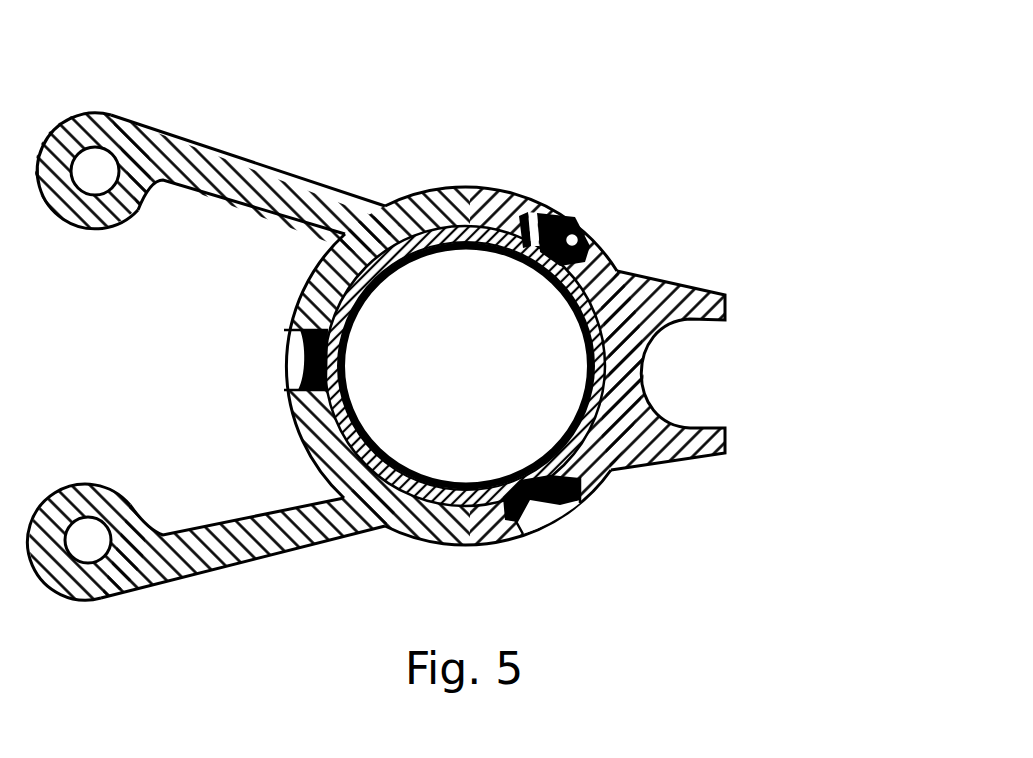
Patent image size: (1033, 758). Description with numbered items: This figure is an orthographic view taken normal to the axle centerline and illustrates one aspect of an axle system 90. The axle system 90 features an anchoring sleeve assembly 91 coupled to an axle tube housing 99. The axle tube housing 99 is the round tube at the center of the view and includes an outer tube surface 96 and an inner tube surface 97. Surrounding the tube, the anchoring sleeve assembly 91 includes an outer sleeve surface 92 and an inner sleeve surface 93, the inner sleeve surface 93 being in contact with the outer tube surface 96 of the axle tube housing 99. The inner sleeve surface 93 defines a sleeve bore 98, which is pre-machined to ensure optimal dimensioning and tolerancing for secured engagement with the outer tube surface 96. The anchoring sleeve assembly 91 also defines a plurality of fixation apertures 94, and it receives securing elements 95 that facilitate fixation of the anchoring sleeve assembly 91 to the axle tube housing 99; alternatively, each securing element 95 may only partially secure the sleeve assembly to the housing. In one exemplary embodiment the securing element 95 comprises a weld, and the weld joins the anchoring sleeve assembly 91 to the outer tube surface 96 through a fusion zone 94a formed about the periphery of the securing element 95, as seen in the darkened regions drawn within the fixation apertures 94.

The axle system 90 is at (852, 30).
The anchoring sleeve assembly 91 is at (314, 472).
The outer sleeve surface 92 is at (473, 187).
The inner sleeve surface 93 is at (505, 204).
The fixation apertures 94 is at (548, 223).
The fusion zone 94a is at (552, 207).
The securing element 95 is at (577, 235).
The outer tube surface 96 is at (421, 252).
The inner tube surface 97 is at (456, 248).
The sleeve bore 98 is at (351, 276).
The axle tube housing 99 is at (538, 451).